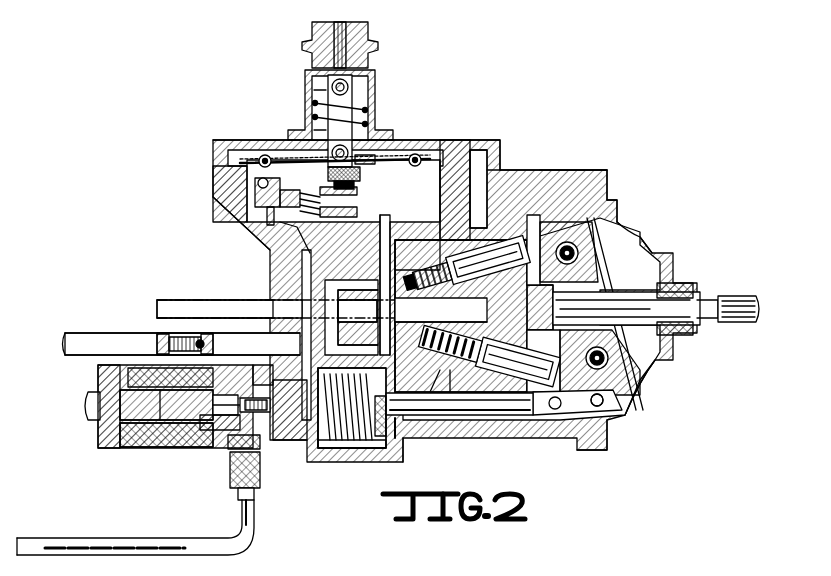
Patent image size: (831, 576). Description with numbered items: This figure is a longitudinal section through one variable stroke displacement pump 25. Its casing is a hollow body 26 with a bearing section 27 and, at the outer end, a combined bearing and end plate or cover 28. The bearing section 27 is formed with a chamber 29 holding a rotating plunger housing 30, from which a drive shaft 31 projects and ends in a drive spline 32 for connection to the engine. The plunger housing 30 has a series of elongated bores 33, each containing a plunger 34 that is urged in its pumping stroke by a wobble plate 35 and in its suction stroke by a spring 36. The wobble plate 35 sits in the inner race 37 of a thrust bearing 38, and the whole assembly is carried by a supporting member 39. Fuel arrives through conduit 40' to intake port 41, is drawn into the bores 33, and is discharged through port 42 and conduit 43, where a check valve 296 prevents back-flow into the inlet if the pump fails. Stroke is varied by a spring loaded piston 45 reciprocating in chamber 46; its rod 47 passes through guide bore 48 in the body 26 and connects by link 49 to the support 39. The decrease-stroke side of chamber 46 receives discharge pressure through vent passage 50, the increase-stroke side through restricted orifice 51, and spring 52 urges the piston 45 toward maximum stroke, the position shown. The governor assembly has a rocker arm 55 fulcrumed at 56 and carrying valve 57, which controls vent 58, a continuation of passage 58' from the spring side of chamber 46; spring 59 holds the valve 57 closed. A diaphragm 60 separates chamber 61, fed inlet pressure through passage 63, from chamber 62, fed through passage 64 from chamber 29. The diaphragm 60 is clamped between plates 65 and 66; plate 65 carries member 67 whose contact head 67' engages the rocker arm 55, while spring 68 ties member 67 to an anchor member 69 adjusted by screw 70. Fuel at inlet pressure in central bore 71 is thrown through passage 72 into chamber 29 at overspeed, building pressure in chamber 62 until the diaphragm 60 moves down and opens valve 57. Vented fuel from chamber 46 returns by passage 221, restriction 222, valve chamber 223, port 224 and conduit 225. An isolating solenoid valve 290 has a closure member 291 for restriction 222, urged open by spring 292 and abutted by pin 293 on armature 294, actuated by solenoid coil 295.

The screw 70 is at (350, 42).
The anchor member 69 is at (352, 82).
The spring 68 is at (372, 92).
The member 67 is at (364, 110).
The contact head 67' is at (389, 139).
The diaphragm 60 is at (245, 150).
The plate 66 is at (282, 159).
The chamber 62 is at (450, 148).
The pump 25 is at (480, 140).
The chamber 61 is at (478, 165).
The passage 64 is at (481, 190).
The bearing section 27 is at (570, 178).
The supporting member 39 is at (610, 182).
The combined bearing and end plate or cover 28 is at (630, 218).
The drive shaft 31 is at (705, 300).
The drive spline 32 is at (745, 320).
The chamber 29 is at (445, 240).
The port 42 is at (395, 275).
The intake port 41 is at (412, 318).
The central bore 71 is at (440, 315).
The passage 72 is at (490, 236).
The rotating plunger housing 30 is at (500, 400).
The inner race 37 is at (585, 265).
The thrust bearing 38 is at (632, 392).
The link 49 is at (605, 432).
The hollow body 26 is at (560, 410).
The wobble plate 35 is at (590, 402).
The rod 47 is at (520, 415).
The plunger 34 is at (480, 380).
The elongated bore 33 is at (455, 380).
The spring 36 is at (430, 380).
The guide bore 48 is at (420, 410).
The restricted orifice 51 is at (345, 368).
The chamber 46 is at (340, 445).
The spring 52 is at (328, 450).
The spring loaded piston 45 is at (370, 452).
The vent passage 50 is at (377, 312).
The conduit 40' is at (215, 295).
The conduit 43 is at (85, 340).
The check valve 296 is at (202, 340).
The isolating solenoid valve 290 is at (90, 430).
The closure member 291 is at (145, 440).
The solenoid coil 295 is at (110, 448).
The pin 293 is at (130, 448).
The armature 294 is at (222, 395).
The spring 292 is at (250, 398).
The passage 221 is at (300, 440).
The restriction 222 is at (218, 428).
The valve chamber 223 is at (238, 449).
The port 224 is at (236, 470).
The conduit 225 is at (252, 540).
The plate 65 is at (225, 172).
The valve 57 is at (255, 188).
The vent 58 is at (230, 215).
The fulcrum 56 is at (256, 236).
The passage 58' is at (270, 242).
The spring 59 is at (350, 197).
The rocker arm 55 is at (352, 178).
The passage 63 is at (425, 185).